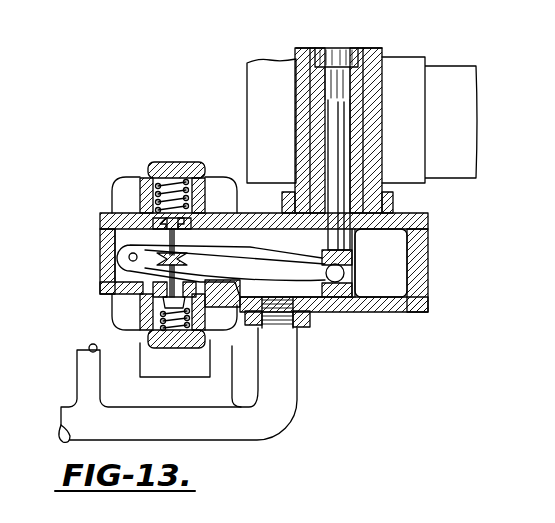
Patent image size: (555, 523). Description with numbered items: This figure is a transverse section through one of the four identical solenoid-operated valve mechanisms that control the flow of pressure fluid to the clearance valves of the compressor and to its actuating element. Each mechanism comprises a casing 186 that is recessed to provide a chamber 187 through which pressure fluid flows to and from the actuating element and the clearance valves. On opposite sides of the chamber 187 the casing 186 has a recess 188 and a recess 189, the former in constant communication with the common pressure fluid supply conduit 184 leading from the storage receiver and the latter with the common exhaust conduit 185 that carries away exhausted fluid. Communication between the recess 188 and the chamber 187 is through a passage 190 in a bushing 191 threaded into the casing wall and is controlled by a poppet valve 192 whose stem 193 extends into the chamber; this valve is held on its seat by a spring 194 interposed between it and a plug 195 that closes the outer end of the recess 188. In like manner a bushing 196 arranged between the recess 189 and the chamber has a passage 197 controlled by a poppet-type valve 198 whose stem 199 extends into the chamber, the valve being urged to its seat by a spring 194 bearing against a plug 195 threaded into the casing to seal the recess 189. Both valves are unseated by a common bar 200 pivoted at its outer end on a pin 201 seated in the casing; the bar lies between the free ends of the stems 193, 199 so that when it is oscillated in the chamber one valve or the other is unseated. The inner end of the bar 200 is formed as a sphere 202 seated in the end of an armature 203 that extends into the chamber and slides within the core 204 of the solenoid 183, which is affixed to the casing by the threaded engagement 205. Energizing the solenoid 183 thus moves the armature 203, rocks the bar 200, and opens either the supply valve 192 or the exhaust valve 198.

The solenoid 183 is at (271, 62).
The pressure fluid supply conduit 184 is at (165, 165).
The exhaust conduit 185 is at (140, 302).
The casing 186 is at (98, 222).
The chamber 187 is at (373, 272).
The recess 188 is at (208, 180).
The recess 189 is at (207, 334).
The passage 190 is at (100, 228).
The bushing 191 is at (122, 222).
The poppet valve 192 is at (143, 180).
The stem 193 is at (185, 241).
The spring 194 is at (187, 178).
The plug 195 is at (203, 178).
The bushing 196 is at (118, 262).
The passage 197 is at (118, 276).
The valve 198 is at (193, 353).
The stem 199 is at (188, 276).
The bar 200 is at (302, 313).
The pin 201 is at (128, 253).
The sphere 202 is at (345, 293).
The armature 203 is at (337, 120).
The core 204 is at (375, 62).
The threaded engagement 205 is at (410, 212).